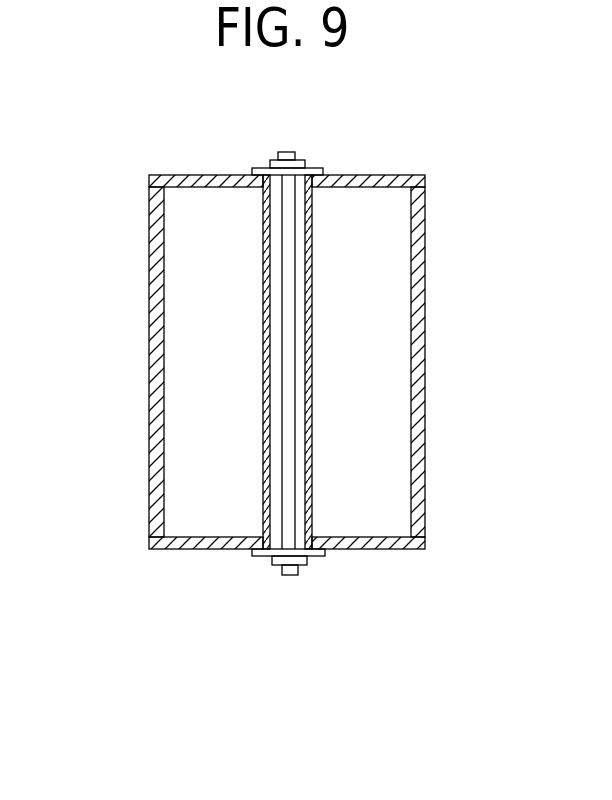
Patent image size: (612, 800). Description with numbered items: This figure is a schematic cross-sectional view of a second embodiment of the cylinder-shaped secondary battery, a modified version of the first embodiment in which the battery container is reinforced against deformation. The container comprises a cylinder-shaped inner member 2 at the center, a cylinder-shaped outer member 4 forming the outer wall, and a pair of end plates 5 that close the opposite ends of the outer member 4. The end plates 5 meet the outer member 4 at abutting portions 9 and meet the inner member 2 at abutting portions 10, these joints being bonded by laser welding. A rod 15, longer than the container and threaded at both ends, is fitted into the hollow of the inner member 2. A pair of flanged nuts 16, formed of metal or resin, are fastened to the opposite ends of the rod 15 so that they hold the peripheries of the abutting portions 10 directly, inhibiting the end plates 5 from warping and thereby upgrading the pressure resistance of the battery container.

The cylinder-shaped inner member 2 is at (263, 513).
The cylinder-shaped outer member 4 is at (425, 353).
The end plates 5 is at (363, 175).
The abutting portions between the end plates and the outer member 9 is at (149, 201).
The abutting portions between the end plates and the inner member 10 is at (263, 190).
The rod 15 is at (318, 556).
The flanged nuts 16 is at (305, 163).